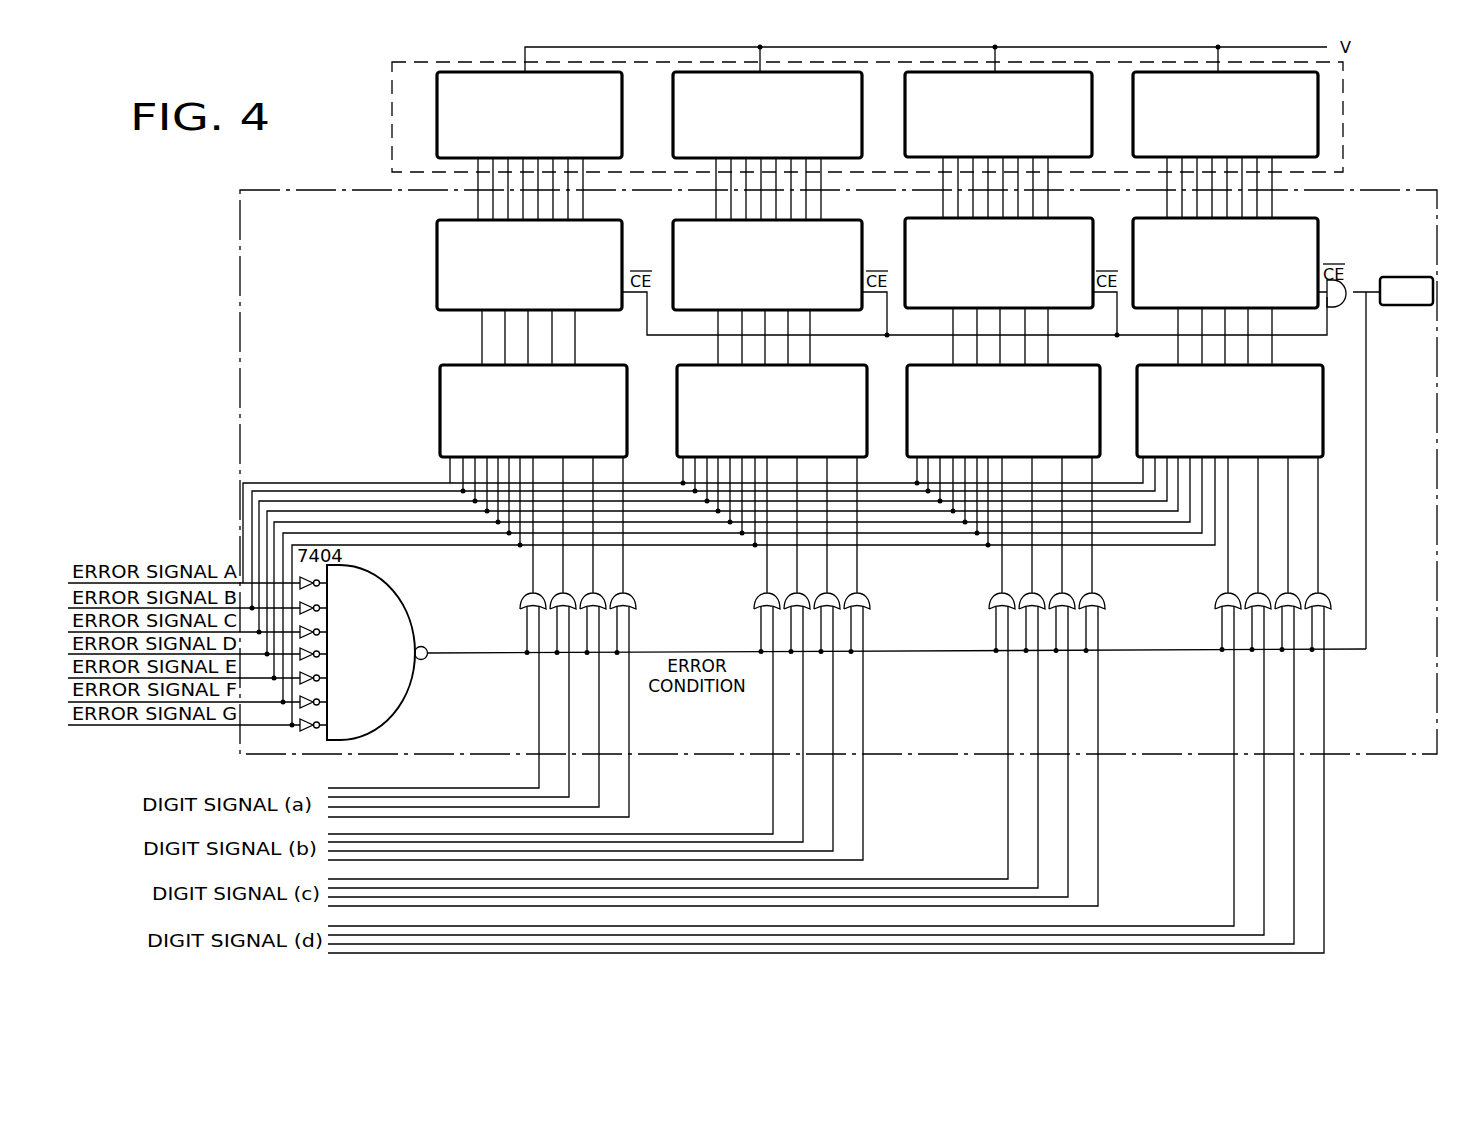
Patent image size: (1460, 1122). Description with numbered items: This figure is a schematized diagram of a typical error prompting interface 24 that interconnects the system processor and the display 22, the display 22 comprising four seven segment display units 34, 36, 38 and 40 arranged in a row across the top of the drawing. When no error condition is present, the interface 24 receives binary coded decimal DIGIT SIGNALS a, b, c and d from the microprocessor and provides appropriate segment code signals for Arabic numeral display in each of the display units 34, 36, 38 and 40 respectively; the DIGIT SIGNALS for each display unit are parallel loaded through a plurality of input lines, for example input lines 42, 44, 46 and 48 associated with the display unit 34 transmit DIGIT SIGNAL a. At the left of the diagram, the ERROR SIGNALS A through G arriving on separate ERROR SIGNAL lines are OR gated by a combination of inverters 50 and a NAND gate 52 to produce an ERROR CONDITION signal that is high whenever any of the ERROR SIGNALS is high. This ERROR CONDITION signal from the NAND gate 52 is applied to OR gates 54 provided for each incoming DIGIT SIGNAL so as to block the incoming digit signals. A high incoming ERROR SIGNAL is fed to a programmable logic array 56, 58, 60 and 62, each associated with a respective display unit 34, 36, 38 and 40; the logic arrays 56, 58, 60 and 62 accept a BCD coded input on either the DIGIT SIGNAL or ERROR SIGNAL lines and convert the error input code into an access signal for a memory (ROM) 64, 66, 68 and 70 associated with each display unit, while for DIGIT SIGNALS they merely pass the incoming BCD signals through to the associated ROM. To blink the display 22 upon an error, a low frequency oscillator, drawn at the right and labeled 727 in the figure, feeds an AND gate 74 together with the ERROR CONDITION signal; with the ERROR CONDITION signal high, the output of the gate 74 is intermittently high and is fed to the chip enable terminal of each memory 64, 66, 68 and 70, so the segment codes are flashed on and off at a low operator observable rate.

The display 22 is at (390, 122).
The error prompting interface 24 is at (238, 347).
The seven segment display unit 34 is at (437, 152).
The seven segment display unit 36 is at (673, 152).
The seven segment display unit 38 is at (905, 152).
The seven segment display unit 40 is at (1133, 152).
The input line 42 is at (629, 792).
The input line 44 is at (599, 792).
The input line 46 is at (569, 790).
The input line 48 is at (539, 782).
The inverter 50 is at (320, 586).
The NAND gate 52 is at (400, 617).
The OR gate 54 is at (1312, 594).
The programmable logic array 56 is at (440, 378).
The programmable logic array 58 is at (677, 380).
The programmable logic array 60 is at (907, 380).
The programmable logic array 62 is at (1137, 380).
The memory (ROM) 64 is at (437, 256).
The memory (ROM) 66 is at (673, 256).
The memory (ROM) 68 is at (905, 236).
The memory (ROM) 70 is at (1133, 232).
The AND gate 74 is at (1345, 307).
The oscillator 727 is at (1405, 277).